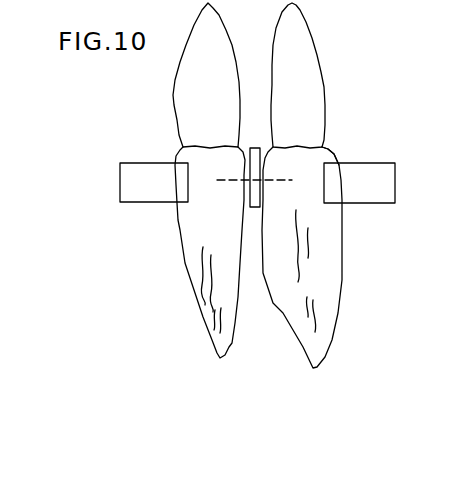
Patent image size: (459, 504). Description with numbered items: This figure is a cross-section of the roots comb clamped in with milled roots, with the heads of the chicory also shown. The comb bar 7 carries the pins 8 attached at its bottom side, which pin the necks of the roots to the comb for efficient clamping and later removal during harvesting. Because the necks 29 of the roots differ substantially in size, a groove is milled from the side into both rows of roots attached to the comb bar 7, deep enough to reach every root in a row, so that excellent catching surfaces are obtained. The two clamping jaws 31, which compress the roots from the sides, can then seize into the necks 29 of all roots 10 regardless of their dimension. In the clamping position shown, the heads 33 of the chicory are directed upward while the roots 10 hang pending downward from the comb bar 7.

The comb bar 7 is at (254, 193).
The pins 8 is at (232, 180).
The roots 10 is at (292, 272).
The necks 29 is at (322, 155).
The clamping jaws 31 is at (150, 173).
The heads 33 is at (303, 68).